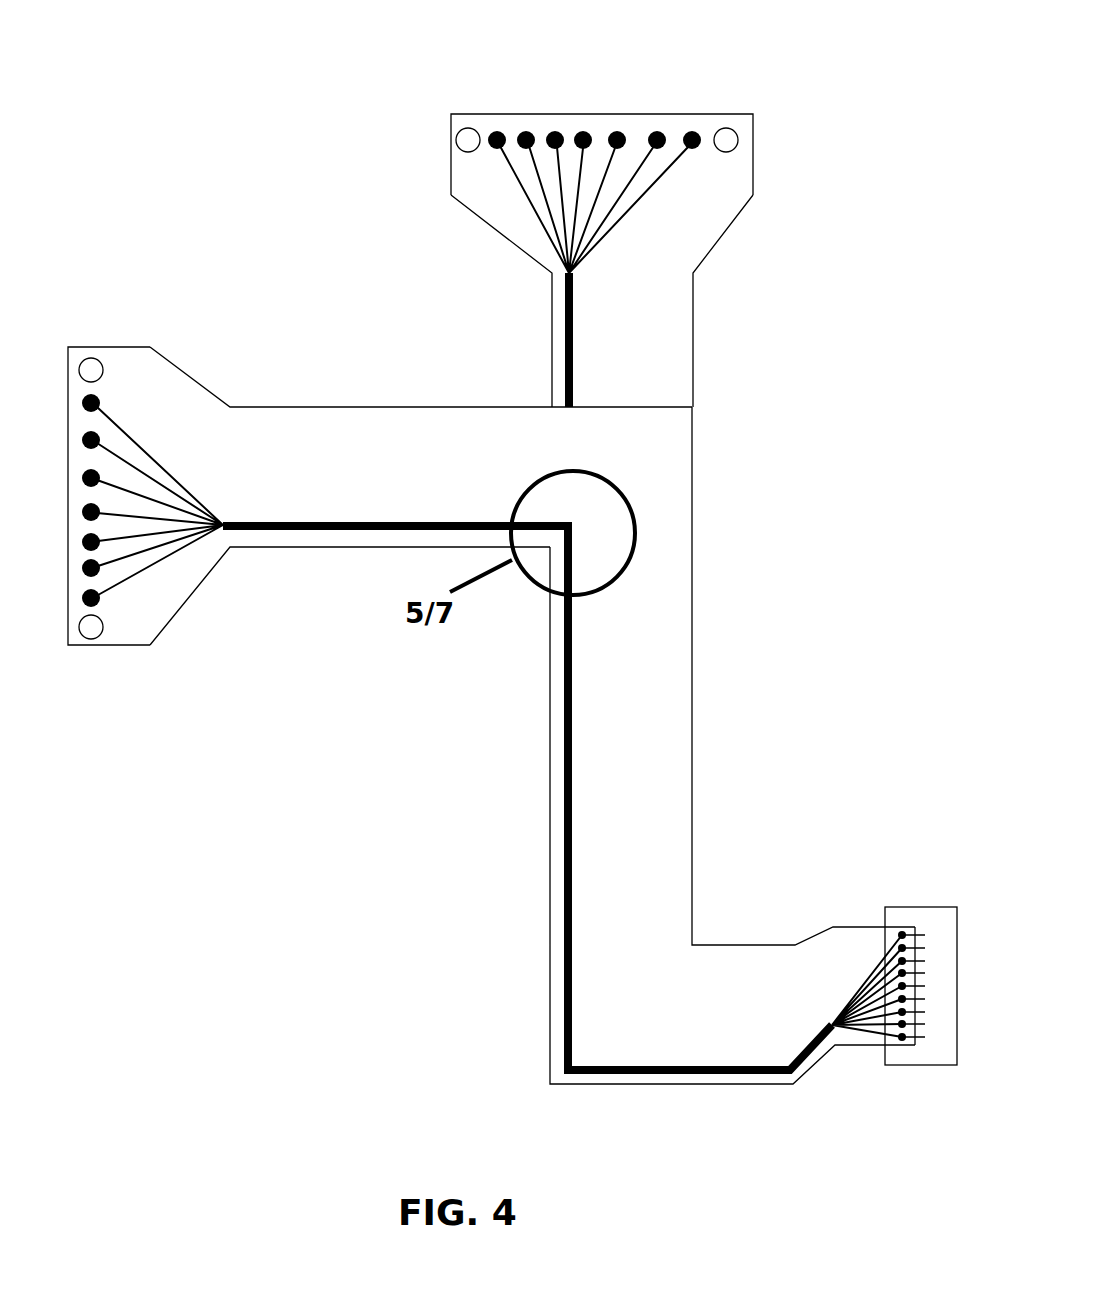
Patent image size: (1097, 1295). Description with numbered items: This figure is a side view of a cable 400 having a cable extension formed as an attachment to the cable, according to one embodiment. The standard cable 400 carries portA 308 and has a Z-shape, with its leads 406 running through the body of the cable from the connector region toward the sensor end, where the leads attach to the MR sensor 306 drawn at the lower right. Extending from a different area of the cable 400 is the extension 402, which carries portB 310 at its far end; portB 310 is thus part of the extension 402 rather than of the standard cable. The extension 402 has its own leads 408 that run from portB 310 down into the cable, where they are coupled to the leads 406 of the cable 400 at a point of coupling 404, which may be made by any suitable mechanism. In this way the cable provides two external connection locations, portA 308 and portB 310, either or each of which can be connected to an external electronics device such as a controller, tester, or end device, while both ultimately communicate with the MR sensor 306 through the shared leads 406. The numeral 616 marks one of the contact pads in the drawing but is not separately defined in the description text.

The MR sensor 306 is at (925, 907).
The portA 308 is at (120, 347).
The portB 310 is at (551, 147).
The cable 400 is at (257, 407).
The extension 402 is at (693, 352).
The point of coupling 404 is at (728, 491).
The leads of the cable 406 is at (345, 527).
The leads of the extension 408 is at (565, 353).
The contact pad 616 is at (617, 140).